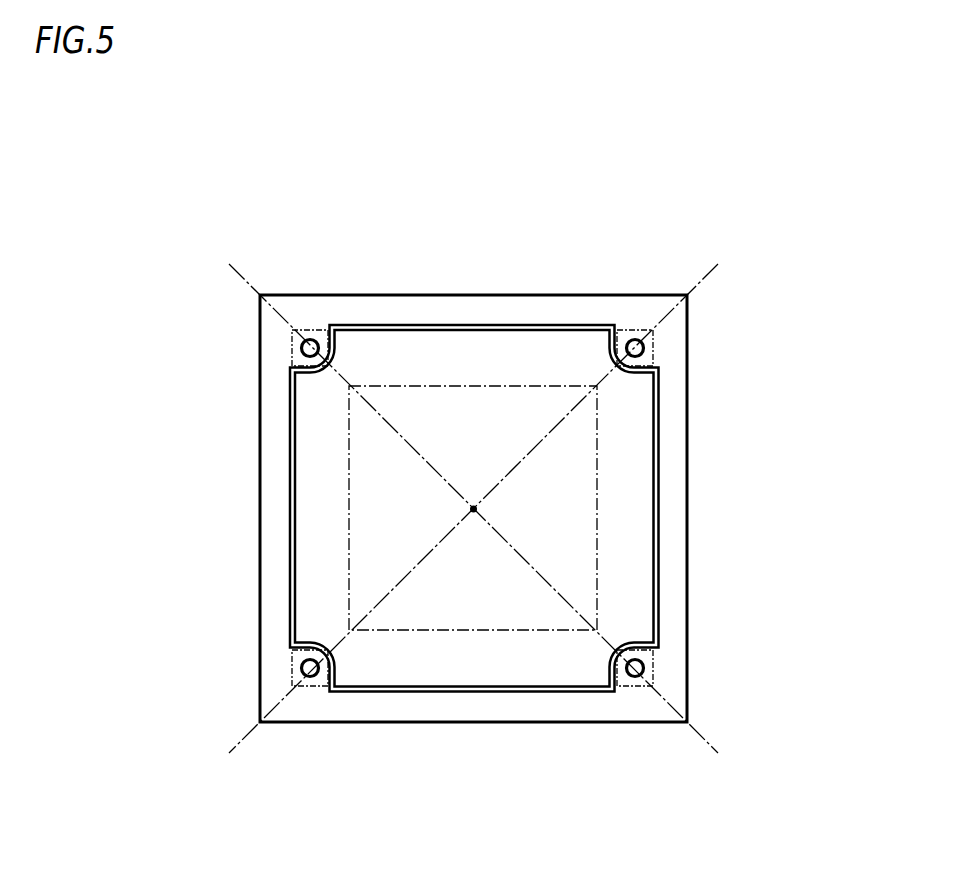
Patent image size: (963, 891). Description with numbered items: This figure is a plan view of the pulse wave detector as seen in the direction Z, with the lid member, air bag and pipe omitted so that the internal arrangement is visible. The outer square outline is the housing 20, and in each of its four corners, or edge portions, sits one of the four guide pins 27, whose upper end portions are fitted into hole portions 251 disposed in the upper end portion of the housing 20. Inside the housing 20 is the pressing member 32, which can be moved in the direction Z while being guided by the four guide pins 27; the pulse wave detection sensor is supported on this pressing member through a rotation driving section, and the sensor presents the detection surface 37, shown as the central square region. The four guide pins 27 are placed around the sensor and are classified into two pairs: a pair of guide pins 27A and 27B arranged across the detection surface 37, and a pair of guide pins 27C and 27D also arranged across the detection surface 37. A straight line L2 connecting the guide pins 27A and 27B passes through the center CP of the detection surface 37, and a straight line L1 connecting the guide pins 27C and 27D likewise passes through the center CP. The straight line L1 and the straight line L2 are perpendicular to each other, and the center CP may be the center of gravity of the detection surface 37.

The housing 20 is at (696, 422).
The guide pins 27 is at (514, 477).
The guide pin 27A is at (311, 338).
The guide pin 27B is at (634, 679).
The guide pin 27C is at (632, 338).
The guide pin 27D is at (311, 679).
The hole portions 251 is at (300, 351).
The pressing member 32 is at (318, 543).
The detection surface 37 is at (349, 430).
The center CP is at (477, 509).
The straight line L1 is at (232, 737).
The straight line L2 is at (712, 741).